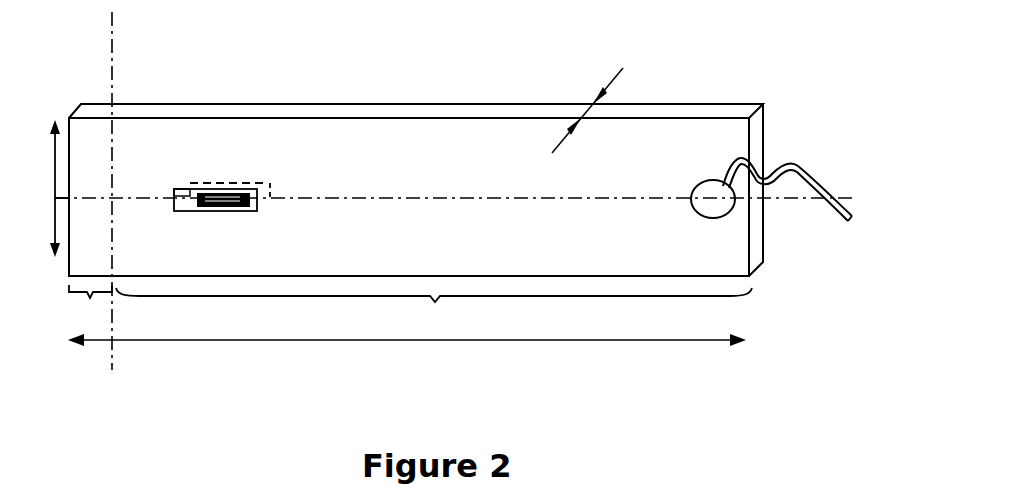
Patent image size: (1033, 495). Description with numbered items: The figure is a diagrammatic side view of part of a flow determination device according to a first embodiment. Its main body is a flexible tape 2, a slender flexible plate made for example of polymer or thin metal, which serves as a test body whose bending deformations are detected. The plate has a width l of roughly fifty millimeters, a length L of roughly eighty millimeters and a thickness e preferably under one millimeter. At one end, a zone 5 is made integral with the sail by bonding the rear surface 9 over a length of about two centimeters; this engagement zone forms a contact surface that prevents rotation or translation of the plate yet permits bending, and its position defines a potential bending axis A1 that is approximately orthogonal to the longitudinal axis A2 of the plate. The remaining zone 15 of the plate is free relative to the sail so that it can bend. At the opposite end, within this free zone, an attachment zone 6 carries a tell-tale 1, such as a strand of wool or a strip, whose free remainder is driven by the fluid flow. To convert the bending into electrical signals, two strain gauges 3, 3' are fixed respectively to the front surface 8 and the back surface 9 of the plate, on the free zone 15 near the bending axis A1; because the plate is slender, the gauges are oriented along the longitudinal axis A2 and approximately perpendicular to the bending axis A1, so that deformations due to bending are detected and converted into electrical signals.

The tell-tale 1 is at (775, 168).
The flexible tape 2 is at (427, 148).
The means for converting deformations into electrical signals 3 is at (208, 227).
The strain gauge 3' is at (243, 169).
The zone made integral with the sail 5 is at (90, 307).
The attachment zone of the tell-tale 6 is at (710, 218).
The front surface 8 is at (140, 135).
The rear surface 9 is at (255, 103).
The free zone 15 is at (434, 312).
The potential bending axis A1 is at (112, 348).
The longitudinal axis A2 is at (650, 197).
The length L is at (407, 352).
The width l is at (51, 188).
The thickness e is at (587, 102).